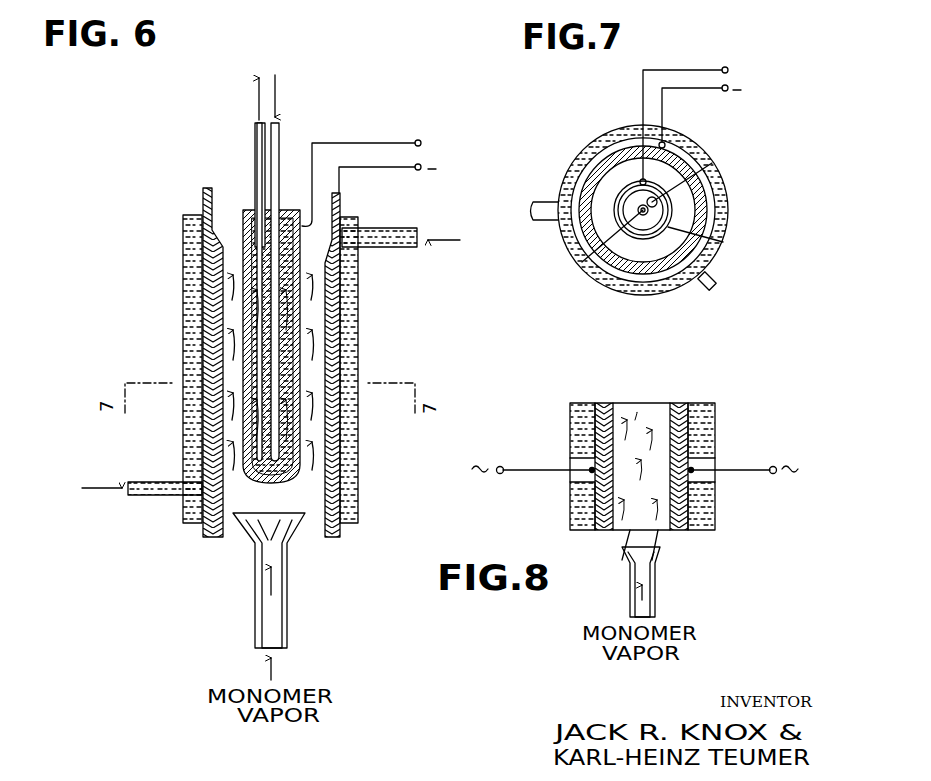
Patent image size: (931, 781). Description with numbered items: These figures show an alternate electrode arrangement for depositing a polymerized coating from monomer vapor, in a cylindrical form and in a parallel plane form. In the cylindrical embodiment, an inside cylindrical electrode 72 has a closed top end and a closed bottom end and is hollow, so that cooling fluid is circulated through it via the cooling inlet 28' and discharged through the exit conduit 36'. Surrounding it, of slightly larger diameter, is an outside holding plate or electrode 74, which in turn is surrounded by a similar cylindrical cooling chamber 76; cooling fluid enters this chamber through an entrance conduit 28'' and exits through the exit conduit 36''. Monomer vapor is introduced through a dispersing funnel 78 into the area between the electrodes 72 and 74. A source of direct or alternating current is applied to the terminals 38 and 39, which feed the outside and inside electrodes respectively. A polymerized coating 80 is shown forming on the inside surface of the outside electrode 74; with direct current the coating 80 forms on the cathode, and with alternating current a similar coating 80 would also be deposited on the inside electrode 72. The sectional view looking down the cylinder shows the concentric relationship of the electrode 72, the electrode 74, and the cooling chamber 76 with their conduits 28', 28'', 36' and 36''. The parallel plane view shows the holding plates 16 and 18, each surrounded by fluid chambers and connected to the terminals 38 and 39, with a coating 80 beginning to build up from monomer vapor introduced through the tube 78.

In FIG. 8, the holding plate 16 is at (690, 403).
In FIG. 8, the holding plate 18 is at (596, 403).
In FIG. 6, the cooling inlet 28' is at (301, 268).
In FIG. 7, the cooling inlet 28' is at (632, 237).
In FIG. 6, the entrance conduit 28'' is at (401, 252).
In FIG. 7, the entrance conduit 28'' is at (744, 283).
In FIG. 6, the exit conduit 36' is at (234, 269).
In FIG. 7, the exit conduit 36' is at (656, 192).
In FIG. 6, the exit conduit 36'' is at (142, 516).
In FIG. 7, the exit conduit 36'' is at (534, 234).
In FIG. 6, the terminal 38 is at (421, 172).
In FIG. 7, the terminal 38 is at (727, 91).
In FIG. 8, the terminal 38 is at (500, 476).
In FIG. 6, the terminal 39 is at (417, 140).
In FIG. 7, the terminal 39 is at (727, 66).
In FIG. 8, the terminal 39 is at (775, 466).
In FIG. 6, the inside cylindrical electrode 72 is at (243, 213).
In FIG. 7, the inside cylindrical electrode 72 is at (700, 235).
In FIG. 6, the outside electrode 74 is at (208, 186).
In FIG. 7, the outside electrode 74 is at (712, 196).
In FIG. 6, the cylindrical cooling chamber 76 is at (183, 258).
In FIG. 7, the cylindrical cooling chamber 76 is at (722, 175).
In FIG. 6, the dispersing funnel 78 is at (288, 552).
In FIG. 8, the dispersing funnel 78 is at (655, 580).
In FIG. 6, the polymerized coating 80 is at (343, 292).
In FIG. 7, the polymerized coating 80 is at (712, 215).
In FIG. 8, the polymerized coating 80 is at (667, 415).